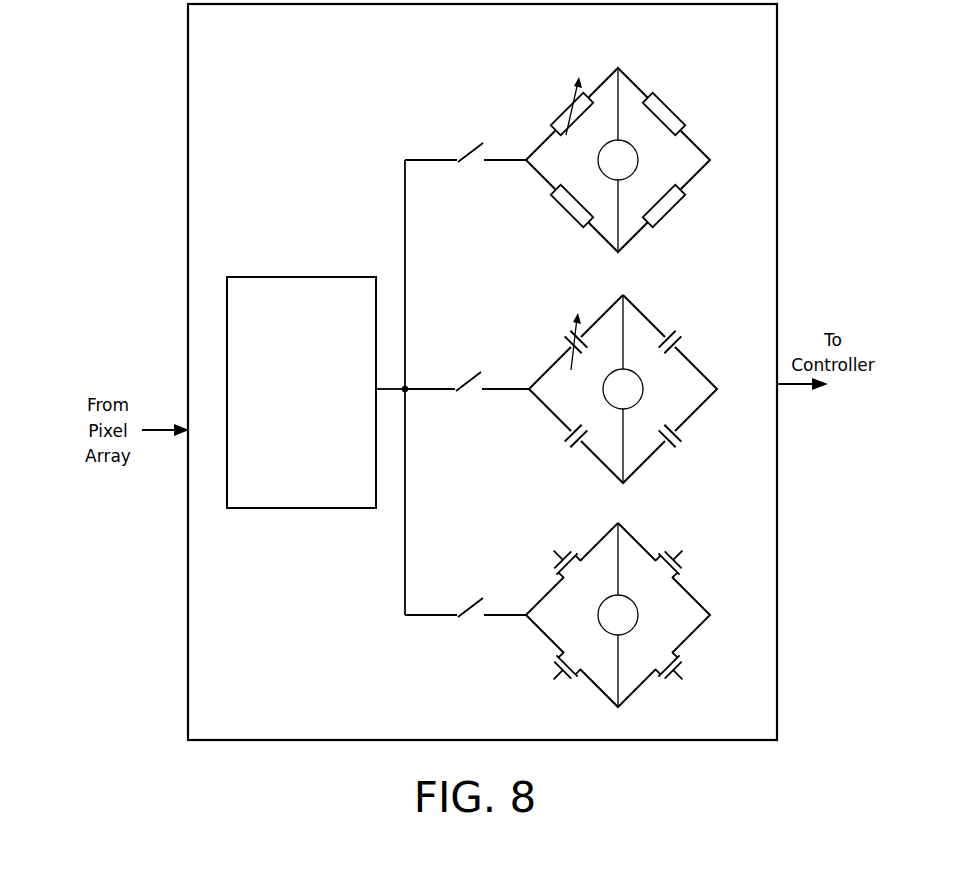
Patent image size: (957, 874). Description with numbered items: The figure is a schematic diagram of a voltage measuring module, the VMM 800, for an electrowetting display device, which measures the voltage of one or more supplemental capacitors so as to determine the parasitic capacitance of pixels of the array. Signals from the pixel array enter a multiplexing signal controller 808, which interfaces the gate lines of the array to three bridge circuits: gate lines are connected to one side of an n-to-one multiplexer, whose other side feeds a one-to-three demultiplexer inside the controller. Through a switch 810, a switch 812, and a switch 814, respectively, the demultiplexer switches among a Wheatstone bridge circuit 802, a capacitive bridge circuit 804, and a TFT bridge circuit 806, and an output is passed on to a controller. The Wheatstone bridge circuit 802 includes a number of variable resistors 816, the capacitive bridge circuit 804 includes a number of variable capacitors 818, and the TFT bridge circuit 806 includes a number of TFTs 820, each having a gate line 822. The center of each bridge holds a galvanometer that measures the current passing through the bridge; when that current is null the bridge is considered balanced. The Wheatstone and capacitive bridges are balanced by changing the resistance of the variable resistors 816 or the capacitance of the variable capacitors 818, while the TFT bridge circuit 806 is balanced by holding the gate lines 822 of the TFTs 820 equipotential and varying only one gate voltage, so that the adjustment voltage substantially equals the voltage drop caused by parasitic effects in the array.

The VMM 800 is at (188, 501).
The Wheatstone bridge circuit 802 is at (683, 103).
The capacitive bridge circuit 804 is at (697, 355).
The TFT bridge circuit 806 is at (697, 564).
The multiplexing signal controller 808 is at (286, 439).
The switch 810 is at (465, 167).
The switch 812 is at (467, 394).
The switch 814 is at (465, 620).
The variable resistor 816 is at (565, 108).
The variable capacitor 818 is at (566, 330).
The TFT 820 is at (585, 555).
The gate line 822 is at (551, 553).